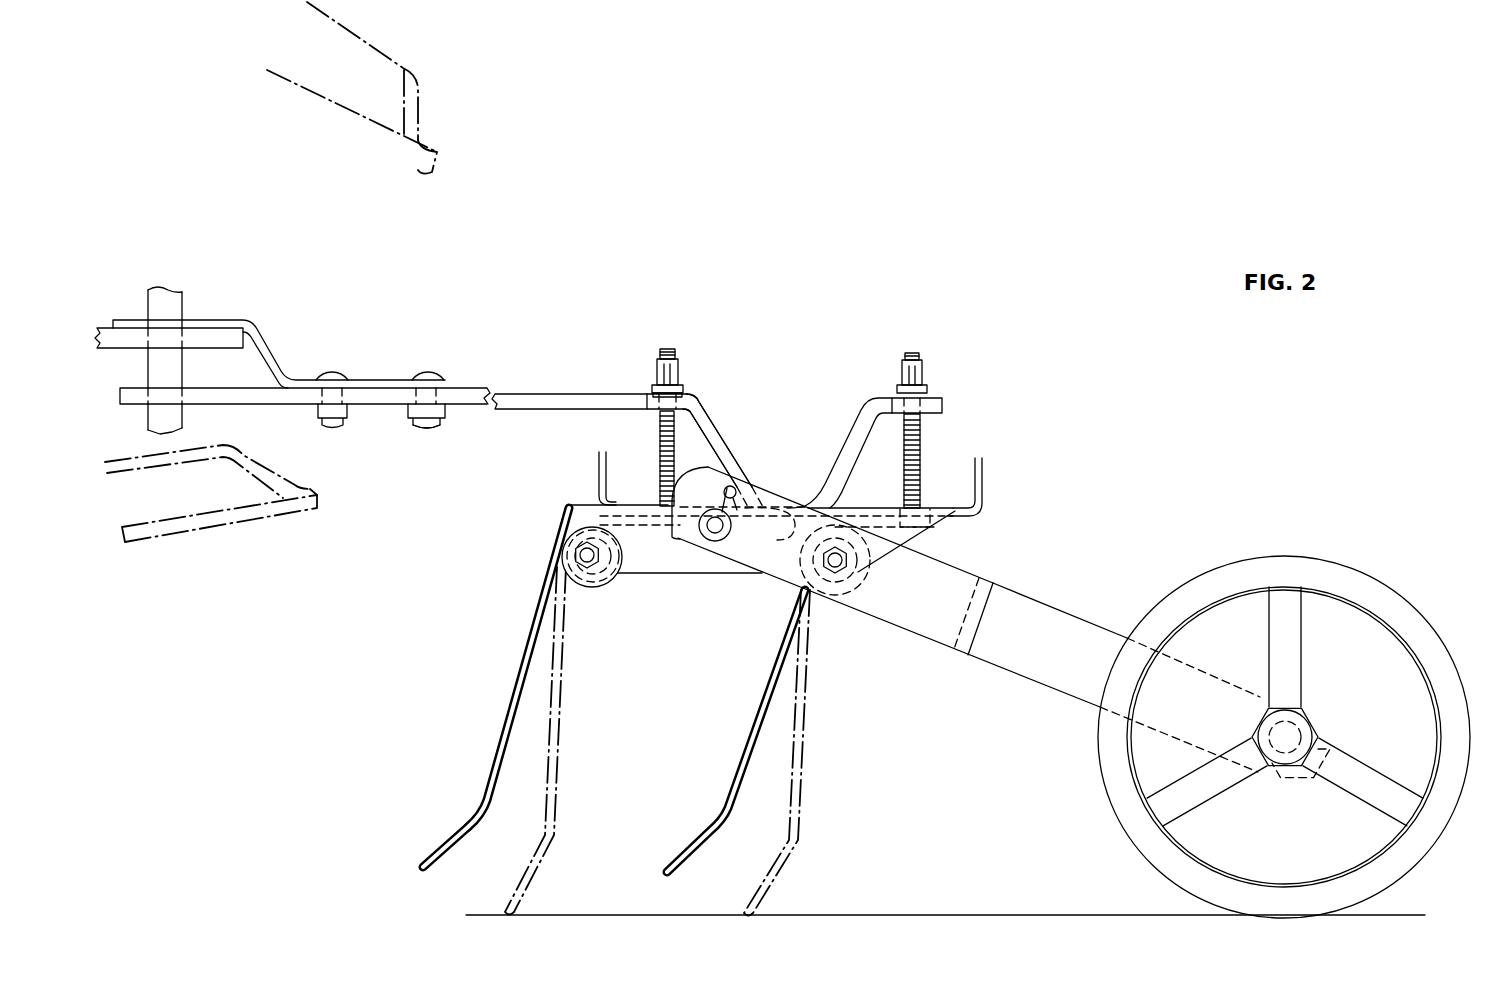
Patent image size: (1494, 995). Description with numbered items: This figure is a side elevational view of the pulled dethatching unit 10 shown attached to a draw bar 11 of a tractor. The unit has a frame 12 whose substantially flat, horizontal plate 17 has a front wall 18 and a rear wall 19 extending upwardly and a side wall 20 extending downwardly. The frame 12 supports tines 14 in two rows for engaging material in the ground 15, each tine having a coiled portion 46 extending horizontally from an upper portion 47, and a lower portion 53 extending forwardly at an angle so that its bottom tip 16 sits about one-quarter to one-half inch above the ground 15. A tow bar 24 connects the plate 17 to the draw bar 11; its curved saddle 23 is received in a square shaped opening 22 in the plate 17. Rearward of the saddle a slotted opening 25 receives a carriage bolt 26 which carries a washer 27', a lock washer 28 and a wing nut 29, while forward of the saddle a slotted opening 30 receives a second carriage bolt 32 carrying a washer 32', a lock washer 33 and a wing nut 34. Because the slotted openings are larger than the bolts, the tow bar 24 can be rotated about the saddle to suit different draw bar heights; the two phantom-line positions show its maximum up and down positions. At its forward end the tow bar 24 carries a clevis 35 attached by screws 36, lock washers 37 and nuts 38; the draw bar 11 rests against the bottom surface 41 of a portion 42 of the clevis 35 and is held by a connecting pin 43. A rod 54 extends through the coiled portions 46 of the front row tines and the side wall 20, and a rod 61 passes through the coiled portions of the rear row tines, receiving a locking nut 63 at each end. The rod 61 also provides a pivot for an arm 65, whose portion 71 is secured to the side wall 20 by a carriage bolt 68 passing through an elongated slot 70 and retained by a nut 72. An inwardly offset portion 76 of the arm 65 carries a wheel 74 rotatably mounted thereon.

The pulled dethatching unit 10 is at (781, 428).
The draw bar 11 is at (95, 328).
The frame 12 is at (712, 578).
The tines 14 is at (518, 673).
The ground 15 is at (590, 915).
The bottom tip 16 is at (665, 868).
The plate 17 is at (927, 508).
The front wall 18 is at (606, 488).
The rear wall 19 is at (983, 483).
The side wall 20 is at (760, 580).
The square shaped opening 22 is at (772, 493).
The curved saddle 23 is at (787, 538).
The tow bar 24 is at (420, 86).
The slotted opening 25 is at (930, 420).
The carriage bolt 26 is at (920, 463).
The washer 27' is at (840, 439).
The lock washer 28 is at (945, 398).
The wing nut 29 is at (925, 372).
The slotted opening 30 is at (657, 410).
The second carriage bolt 32 is at (645, 458).
The washer 32' is at (642, 386).
The lock washer 33 is at (690, 393).
The wing nut 34 is at (675, 370).
The clevis 35 is at (249, 318).
The screws 36 is at (425, 372).
The lock washers 37 is at (438, 410).
The nuts 38 is at (437, 428).
The bottom surface 41 is at (255, 345).
The portion of clevis 42 is at (193, 320).
The connecting pin 43 is at (183, 370).
The coiled portion 46 is at (605, 585).
The upper portion 47 is at (553, 672).
The lower portion 53 is at (468, 812).
The rod 54 is at (575, 553).
The rod 61 is at (828, 567).
The locking nut 63 is at (855, 565).
The arm 65 is at (1040, 687).
The carriage bolt 68 is at (722, 497).
The elongated slot 70 is at (737, 481).
The portion of arm 71 is at (945, 652).
The nut 72 is at (708, 535).
The wheel 74 is at (1398, 595).
The portion of arm 76 is at (1010, 592).